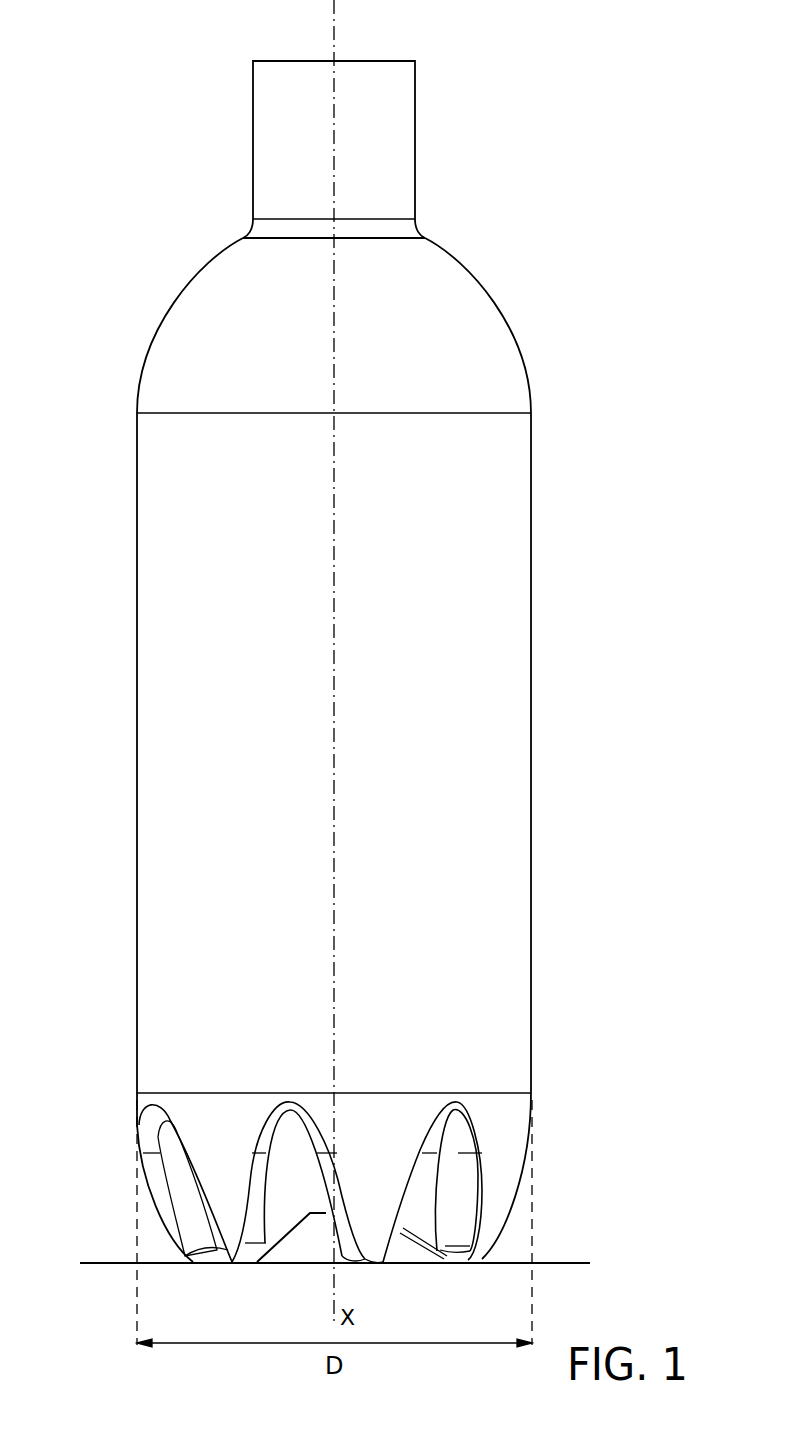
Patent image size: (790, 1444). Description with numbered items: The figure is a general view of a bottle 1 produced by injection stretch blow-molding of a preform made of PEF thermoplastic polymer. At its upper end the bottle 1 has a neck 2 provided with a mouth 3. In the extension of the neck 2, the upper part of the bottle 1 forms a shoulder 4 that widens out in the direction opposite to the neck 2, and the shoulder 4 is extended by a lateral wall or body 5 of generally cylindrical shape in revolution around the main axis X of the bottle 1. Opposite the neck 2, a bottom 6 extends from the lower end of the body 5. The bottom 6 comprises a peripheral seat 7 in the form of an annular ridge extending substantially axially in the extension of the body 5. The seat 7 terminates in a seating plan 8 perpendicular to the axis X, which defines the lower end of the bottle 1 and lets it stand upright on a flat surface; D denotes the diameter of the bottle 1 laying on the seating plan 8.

The bottle 1 is at (610, 609).
The neck 2 is at (424, 233).
The mouth 3 is at (378, 61).
The shoulder 4 is at (147, 346).
The body 5 is at (118, 414).
The bottom 6 is at (530, 1146).
The peripheral seat 7 is at (490, 1251).
The seating plan 8 is at (485, 1264).